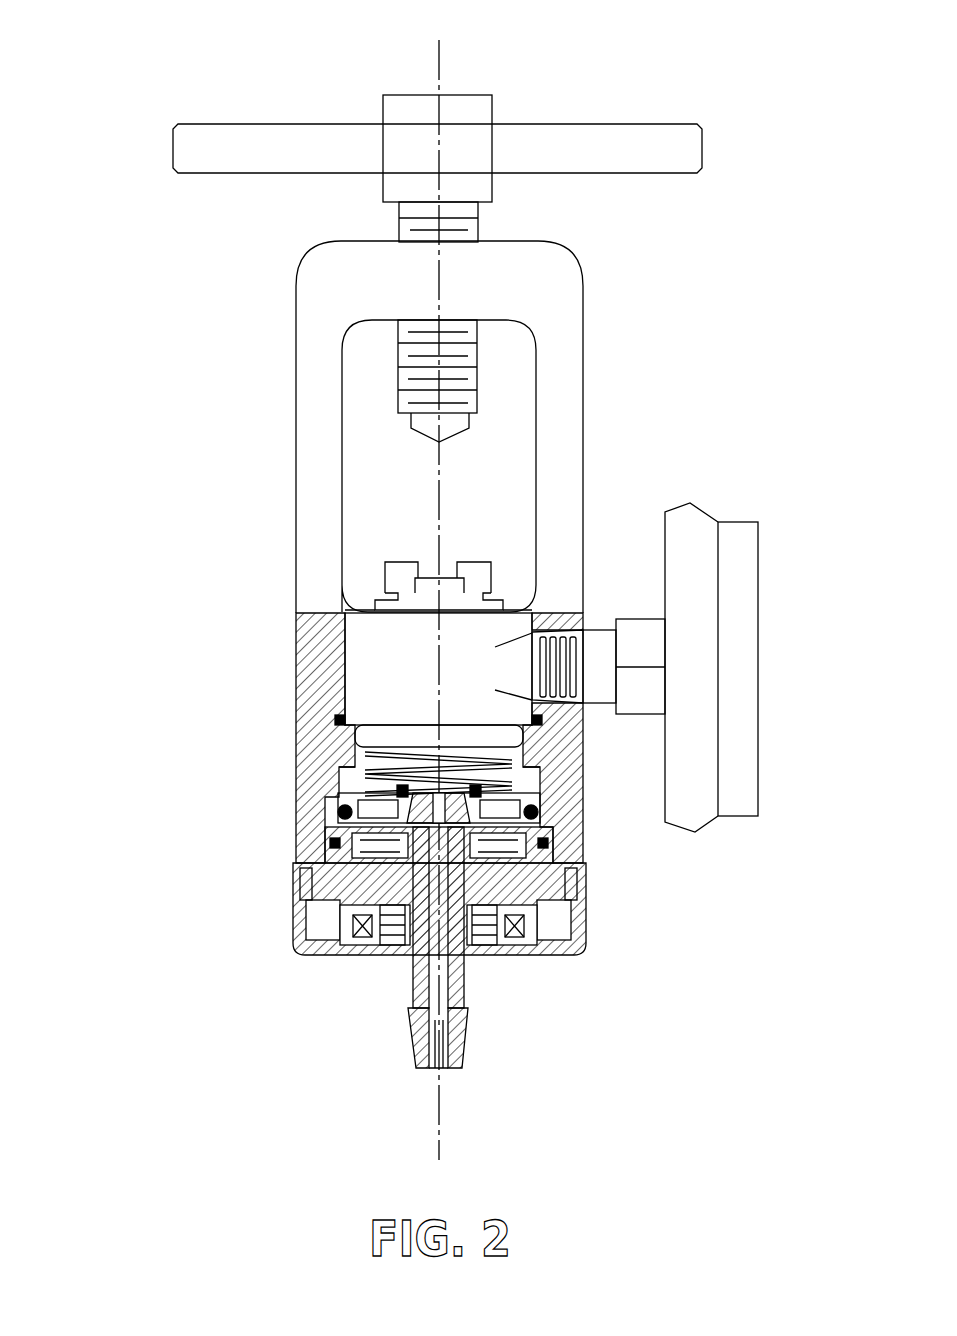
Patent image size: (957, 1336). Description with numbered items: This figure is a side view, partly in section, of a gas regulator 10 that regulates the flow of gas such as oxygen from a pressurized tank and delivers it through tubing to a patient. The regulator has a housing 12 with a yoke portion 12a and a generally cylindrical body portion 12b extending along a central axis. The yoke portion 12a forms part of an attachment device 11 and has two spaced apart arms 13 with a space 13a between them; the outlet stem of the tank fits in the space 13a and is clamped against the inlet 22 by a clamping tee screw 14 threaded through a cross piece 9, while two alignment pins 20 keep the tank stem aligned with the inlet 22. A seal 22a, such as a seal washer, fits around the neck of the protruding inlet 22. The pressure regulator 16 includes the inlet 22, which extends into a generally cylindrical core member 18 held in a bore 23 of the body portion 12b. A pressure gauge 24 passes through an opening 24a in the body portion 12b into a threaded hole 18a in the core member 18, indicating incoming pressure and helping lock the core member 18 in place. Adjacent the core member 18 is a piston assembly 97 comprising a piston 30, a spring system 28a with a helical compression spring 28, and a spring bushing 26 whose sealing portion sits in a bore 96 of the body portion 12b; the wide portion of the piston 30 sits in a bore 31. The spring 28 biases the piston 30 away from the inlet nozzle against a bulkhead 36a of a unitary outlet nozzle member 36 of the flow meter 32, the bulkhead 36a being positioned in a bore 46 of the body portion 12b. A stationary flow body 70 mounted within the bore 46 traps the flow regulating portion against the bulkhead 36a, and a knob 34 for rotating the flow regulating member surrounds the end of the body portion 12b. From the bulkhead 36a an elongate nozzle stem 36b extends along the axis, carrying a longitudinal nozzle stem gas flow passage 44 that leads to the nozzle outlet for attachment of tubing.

The gas regulator 10 is at (785, 75).
The attachment device 11 is at (202, 368).
The cross piece 9 is at (487, 265).
The housing 12 is at (560, 830).
The yoke portion 12a is at (560, 365).
The body portion 12b is at (572, 800).
The arms 13 is at (557, 412).
The space 13a is at (518, 449).
The clamping tee screw 14 is at (278, 140).
The pressure regulator 16 is at (240, 680).
The core member 18 is at (370, 643).
The threaded hole 18a is at (500, 628).
The alignment pins 20 is at (400, 560).
The inlet 22 is at (447, 578).
The seal 22a is at (507, 600).
The bore 23 is at (335, 662).
The pressure gauge 24 is at (748, 586).
The opening 24a is at (583, 628).
The spring bushing 26 is at (330, 768).
The helical compression spring 28 is at (545, 778).
The spring system 28a is at (548, 753).
The piston 30 is at (338, 797).
The bore 31 is at (335, 782).
The flow meter 32 is at (245, 985).
The knob 34 is at (293, 937).
The unitary outlet nozzle member 36 is at (467, 1010).
The bulkhead 36a is at (330, 843).
The nozzle stem 36b is at (467, 1040).
The longitudinal nozzle stem gas flow passage 44 is at (443, 1068).
The bore 46 is at (578, 858).
The flow body 70 is at (310, 870).
The bore 96 is at (358, 762).
The piston assembly 97 is at (330, 733).